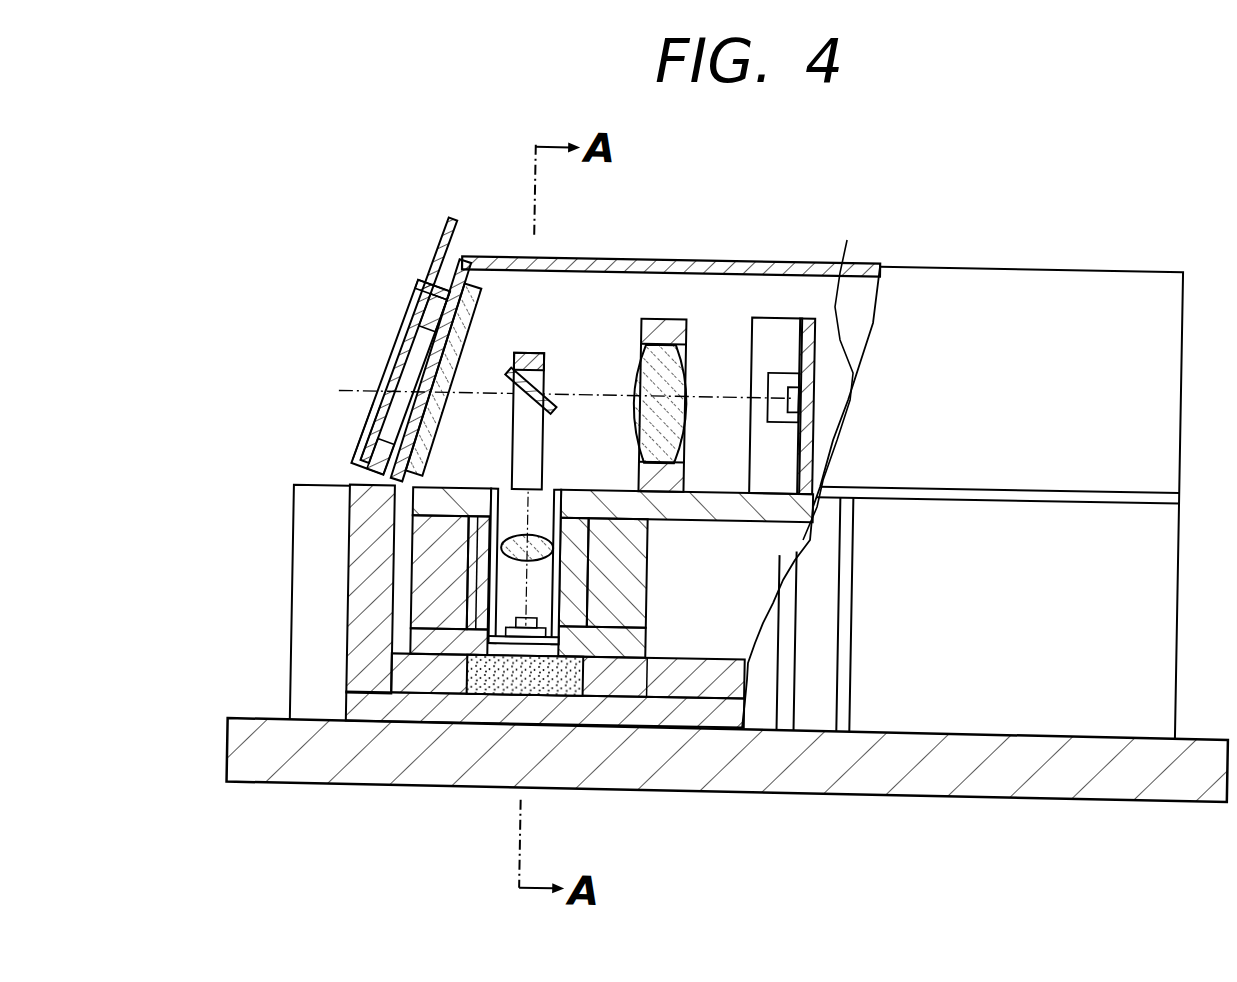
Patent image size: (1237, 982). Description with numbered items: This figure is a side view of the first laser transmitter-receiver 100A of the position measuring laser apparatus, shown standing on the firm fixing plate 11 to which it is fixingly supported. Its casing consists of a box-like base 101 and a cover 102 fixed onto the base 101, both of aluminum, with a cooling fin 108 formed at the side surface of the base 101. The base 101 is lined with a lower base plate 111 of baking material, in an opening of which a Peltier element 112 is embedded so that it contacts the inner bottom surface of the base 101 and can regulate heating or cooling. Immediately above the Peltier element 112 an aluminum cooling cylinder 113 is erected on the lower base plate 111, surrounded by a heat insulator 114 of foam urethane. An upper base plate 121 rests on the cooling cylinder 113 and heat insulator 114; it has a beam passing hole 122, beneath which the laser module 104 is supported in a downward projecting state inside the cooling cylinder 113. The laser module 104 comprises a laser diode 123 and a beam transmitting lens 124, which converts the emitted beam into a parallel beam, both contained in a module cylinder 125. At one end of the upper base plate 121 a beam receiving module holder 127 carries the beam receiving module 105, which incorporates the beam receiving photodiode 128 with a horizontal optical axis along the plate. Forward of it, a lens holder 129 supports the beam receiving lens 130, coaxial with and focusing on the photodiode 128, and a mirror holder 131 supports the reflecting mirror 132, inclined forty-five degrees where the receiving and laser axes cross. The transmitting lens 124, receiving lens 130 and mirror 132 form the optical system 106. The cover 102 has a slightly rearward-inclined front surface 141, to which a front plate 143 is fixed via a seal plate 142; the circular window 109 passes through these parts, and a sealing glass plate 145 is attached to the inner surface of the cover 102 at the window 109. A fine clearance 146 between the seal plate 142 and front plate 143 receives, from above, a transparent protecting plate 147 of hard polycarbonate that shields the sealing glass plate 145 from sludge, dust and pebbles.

The fixing plate 11 is at (292, 766).
The first laser transmitter-receiver 100A is at (999, 417).
The base 101 is at (728, 688).
The cover 102 is at (1076, 267).
The laser module 104 is at (520, 665).
The beam receiving module 105 is at (781, 357).
The optical system 106 is at (632, 308).
The cooling fin 108 is at (302, 612).
The window 109 is at (375, 295).
The lower base plate 111 is at (794, 752).
The Peltier element 112 is at (459, 708).
The cooling cylinder 113 is at (472, 587).
The heat insulator 114 is at (431, 543).
The upper base plate 121 is at (806, 544).
The beam passing hole 122 is at (540, 499).
The laser diode 123 is at (594, 612).
The beam transmitting lens 124 is at (596, 545).
The module cylinder 125 is at (601, 578).
The beam receiving module holder 127 is at (837, 345).
The beam receiving photodiode 128 is at (793, 402).
The lens holder 129 is at (682, 324).
The beam receiving lens 130 is at (670, 374).
The mirror holder 131 is at (538, 359).
The reflecting mirror 132 is at (546, 401).
The front surface 141 is at (456, 260).
The seal plate 142 is at (359, 459).
The front plate 143 is at (416, 286).
The sealing glass plate 145 is at (472, 312).
The clearance 146 is at (364, 424).
The transparent protecting plate 147 is at (448, 217).